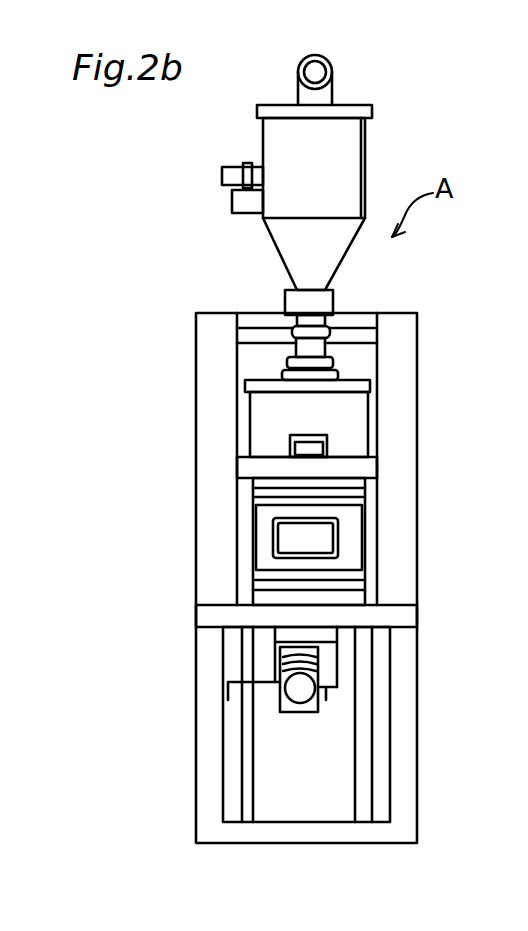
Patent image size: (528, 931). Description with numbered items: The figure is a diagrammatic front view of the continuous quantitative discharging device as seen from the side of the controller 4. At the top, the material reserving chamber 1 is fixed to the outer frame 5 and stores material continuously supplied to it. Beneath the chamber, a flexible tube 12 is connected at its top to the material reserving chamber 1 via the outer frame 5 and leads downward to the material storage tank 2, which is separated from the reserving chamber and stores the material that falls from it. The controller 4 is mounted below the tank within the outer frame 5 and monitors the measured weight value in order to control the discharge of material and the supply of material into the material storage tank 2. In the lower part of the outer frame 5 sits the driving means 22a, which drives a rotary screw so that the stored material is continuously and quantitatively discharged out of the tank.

The material reserving chamber 1 is at (347, 168).
The flexible tube 12 is at (318, 352).
The material storage tank 2 is at (358, 423).
The controller 4 is at (348, 545).
The outer frame 5 is at (402, 337).
The driving means 22a is at (303, 695).